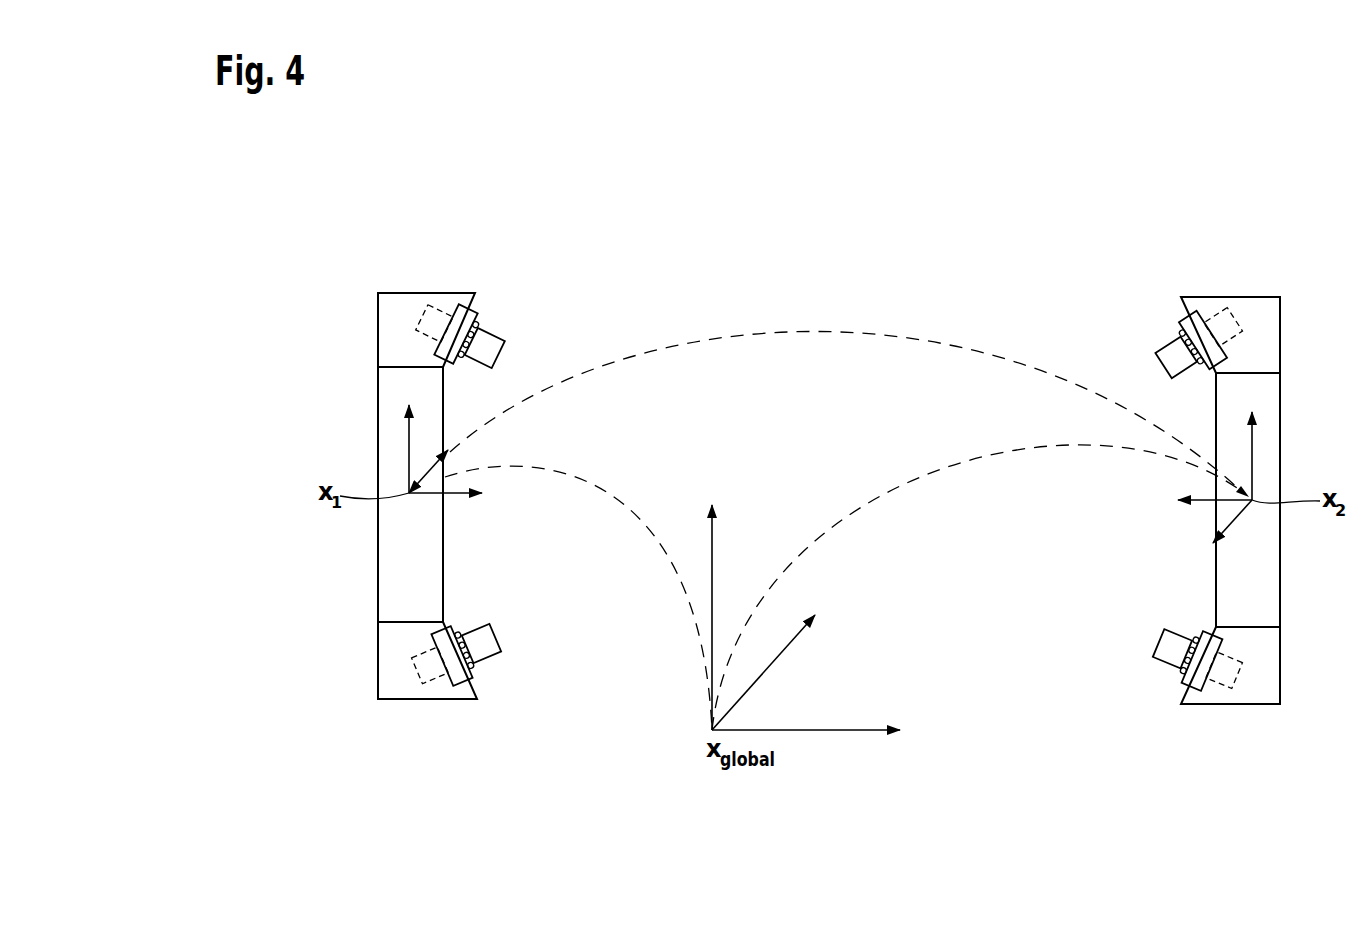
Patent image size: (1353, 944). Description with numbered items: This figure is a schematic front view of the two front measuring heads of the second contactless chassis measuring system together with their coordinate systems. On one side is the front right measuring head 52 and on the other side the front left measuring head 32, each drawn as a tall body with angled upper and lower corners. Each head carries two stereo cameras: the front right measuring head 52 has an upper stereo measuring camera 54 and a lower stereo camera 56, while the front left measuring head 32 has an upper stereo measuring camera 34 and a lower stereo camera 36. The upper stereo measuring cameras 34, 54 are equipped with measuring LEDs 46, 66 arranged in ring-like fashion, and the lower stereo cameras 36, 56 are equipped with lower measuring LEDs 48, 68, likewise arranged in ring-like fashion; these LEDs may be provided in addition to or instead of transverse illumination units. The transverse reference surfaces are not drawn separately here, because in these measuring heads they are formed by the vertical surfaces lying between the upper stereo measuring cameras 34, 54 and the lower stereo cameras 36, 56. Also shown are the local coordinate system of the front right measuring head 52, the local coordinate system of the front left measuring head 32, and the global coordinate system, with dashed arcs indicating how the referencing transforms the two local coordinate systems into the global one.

The front left measuring head 32 is at (1240, 724).
The upper stereo measuring camera 34 is at (1154, 335).
The lower stereo camera 36 is at (1166, 641).
The measuring LEDs 46 is at (1184, 323).
The lower measuring LEDs 48 is at (1201, 636).
The front right measuring head 52 is at (417, 708).
The upper stereo measuring camera 54 is at (503, 328).
The lower stereo camera 56 is at (486, 638).
The measuring LEDs 66 is at (476, 319).
The lower measuring LEDs 68 is at (457, 629).